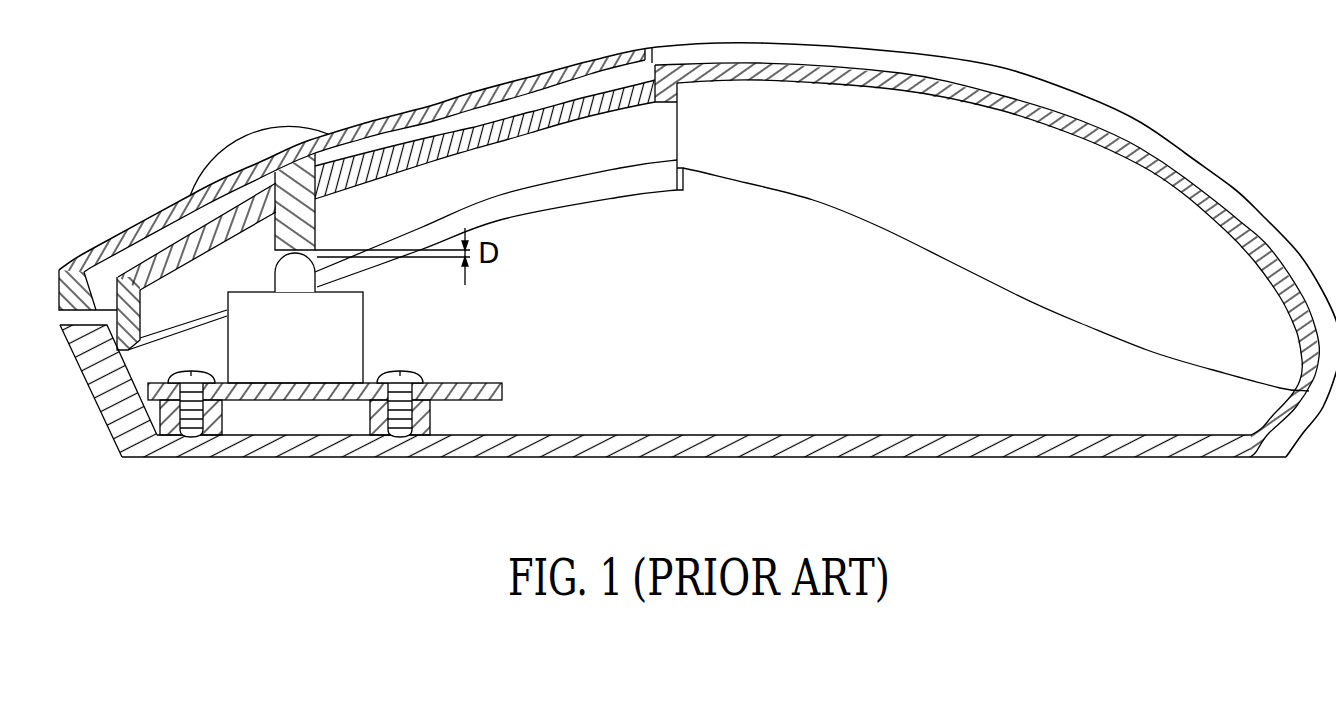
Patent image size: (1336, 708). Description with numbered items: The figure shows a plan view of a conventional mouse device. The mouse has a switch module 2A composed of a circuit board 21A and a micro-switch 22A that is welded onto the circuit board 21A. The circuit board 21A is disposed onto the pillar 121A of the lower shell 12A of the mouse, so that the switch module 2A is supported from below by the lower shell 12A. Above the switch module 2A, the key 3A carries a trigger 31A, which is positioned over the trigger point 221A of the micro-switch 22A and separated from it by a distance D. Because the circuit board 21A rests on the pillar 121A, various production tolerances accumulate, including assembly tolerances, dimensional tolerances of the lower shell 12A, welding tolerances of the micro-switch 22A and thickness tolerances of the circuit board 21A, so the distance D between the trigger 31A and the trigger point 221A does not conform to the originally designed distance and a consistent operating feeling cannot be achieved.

The key 3A is at (368, 126).
The trigger 31A is at (295, 238).
The trigger point 221A is at (293, 271).
The micro-switch 22A is at (343, 327).
The circuit board 21A is at (487, 390).
The switch module 2A is at (397, 343).
The lower shell 12A is at (283, 458).
The pillar 121A is at (417, 412).